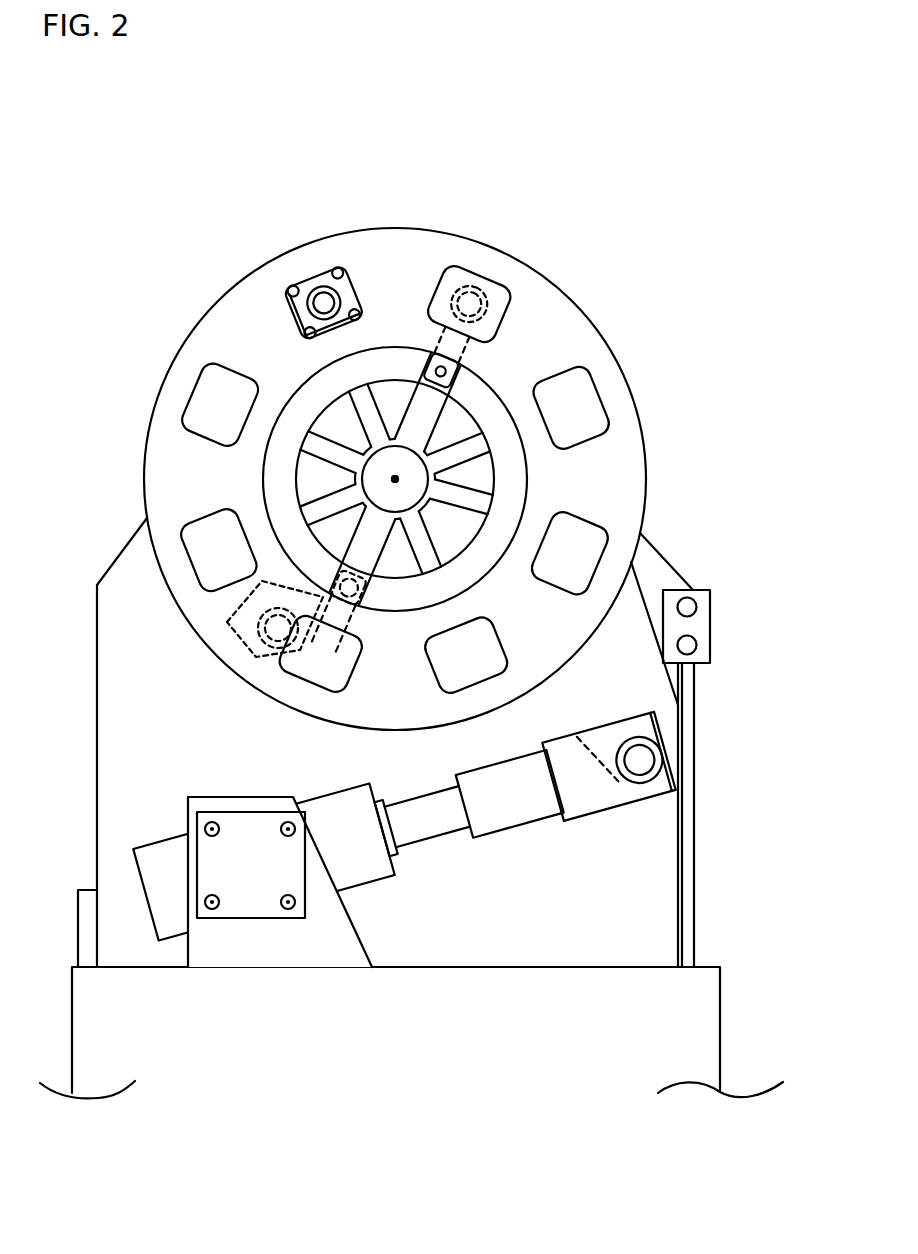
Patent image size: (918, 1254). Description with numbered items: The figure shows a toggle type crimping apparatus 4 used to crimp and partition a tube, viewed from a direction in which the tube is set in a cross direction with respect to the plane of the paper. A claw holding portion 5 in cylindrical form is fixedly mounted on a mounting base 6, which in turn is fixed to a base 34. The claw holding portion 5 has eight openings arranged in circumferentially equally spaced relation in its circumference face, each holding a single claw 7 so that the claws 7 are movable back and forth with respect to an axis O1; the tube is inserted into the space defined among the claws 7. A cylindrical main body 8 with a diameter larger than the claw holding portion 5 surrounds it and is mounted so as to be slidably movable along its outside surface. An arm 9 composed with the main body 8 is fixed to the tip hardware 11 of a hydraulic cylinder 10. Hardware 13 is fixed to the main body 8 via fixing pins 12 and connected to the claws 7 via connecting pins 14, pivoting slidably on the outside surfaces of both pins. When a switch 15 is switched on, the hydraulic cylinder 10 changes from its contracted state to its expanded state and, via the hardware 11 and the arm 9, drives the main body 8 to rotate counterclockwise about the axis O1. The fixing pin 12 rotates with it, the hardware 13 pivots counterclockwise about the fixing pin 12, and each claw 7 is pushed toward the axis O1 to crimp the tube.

The crimping apparatus 4 is at (527, 212).
The claw holding portion 5 is at (318, 396).
The mounting base 6 is at (660, 548).
The claw 7 is at (420, 423).
The main body 8 is at (627, 450).
The arm 9 is at (628, 602).
The hydraulic cylinder 10 is at (178, 1008).
The tip hardware 11 is at (637, 806).
The fixing pin 12 is at (232, 628).
The hardware 13 is at (283, 603).
The connecting pin 14 is at (336, 592).
The switch 15 is at (702, 628).
The base 34 is at (707, 964).
The axis O1 is at (394, 479).